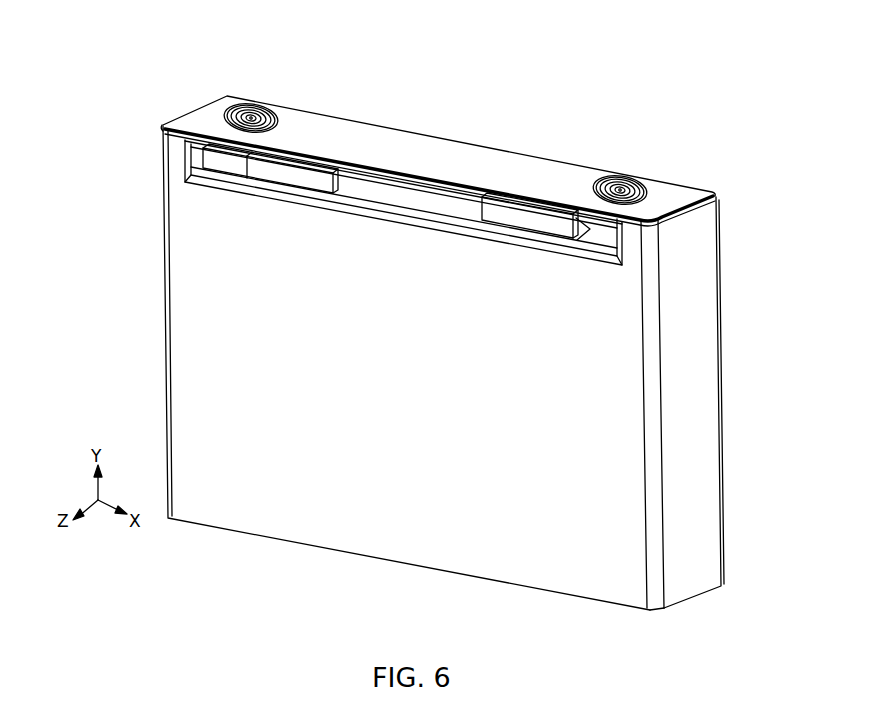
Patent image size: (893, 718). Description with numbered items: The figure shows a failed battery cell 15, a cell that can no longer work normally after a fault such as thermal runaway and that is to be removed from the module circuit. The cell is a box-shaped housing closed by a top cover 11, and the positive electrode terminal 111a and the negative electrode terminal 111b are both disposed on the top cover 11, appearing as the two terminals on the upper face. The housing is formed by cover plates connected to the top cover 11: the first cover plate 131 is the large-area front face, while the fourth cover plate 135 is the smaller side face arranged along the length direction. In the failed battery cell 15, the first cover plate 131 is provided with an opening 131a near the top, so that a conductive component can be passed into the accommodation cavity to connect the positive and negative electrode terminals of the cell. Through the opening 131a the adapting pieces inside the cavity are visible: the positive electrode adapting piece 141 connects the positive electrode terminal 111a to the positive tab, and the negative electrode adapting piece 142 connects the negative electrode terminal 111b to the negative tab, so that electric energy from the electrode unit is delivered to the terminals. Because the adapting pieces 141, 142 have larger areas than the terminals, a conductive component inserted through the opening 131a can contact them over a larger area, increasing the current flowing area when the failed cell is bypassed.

The failed battery cell 15 is at (150, 80).
The top cover 11 is at (425, 134).
The positive electrode terminal 111a is at (252, 116).
The negative electrode terminal 111b is at (628, 182).
The first cover plate 131 is at (577, 585).
The opening 131a is at (194, 163).
The fourth cover plate 135 is at (692, 582).
The positive electrode adapting piece 141 is at (317, 180).
The negative electrode adapting piece 142 is at (518, 212).